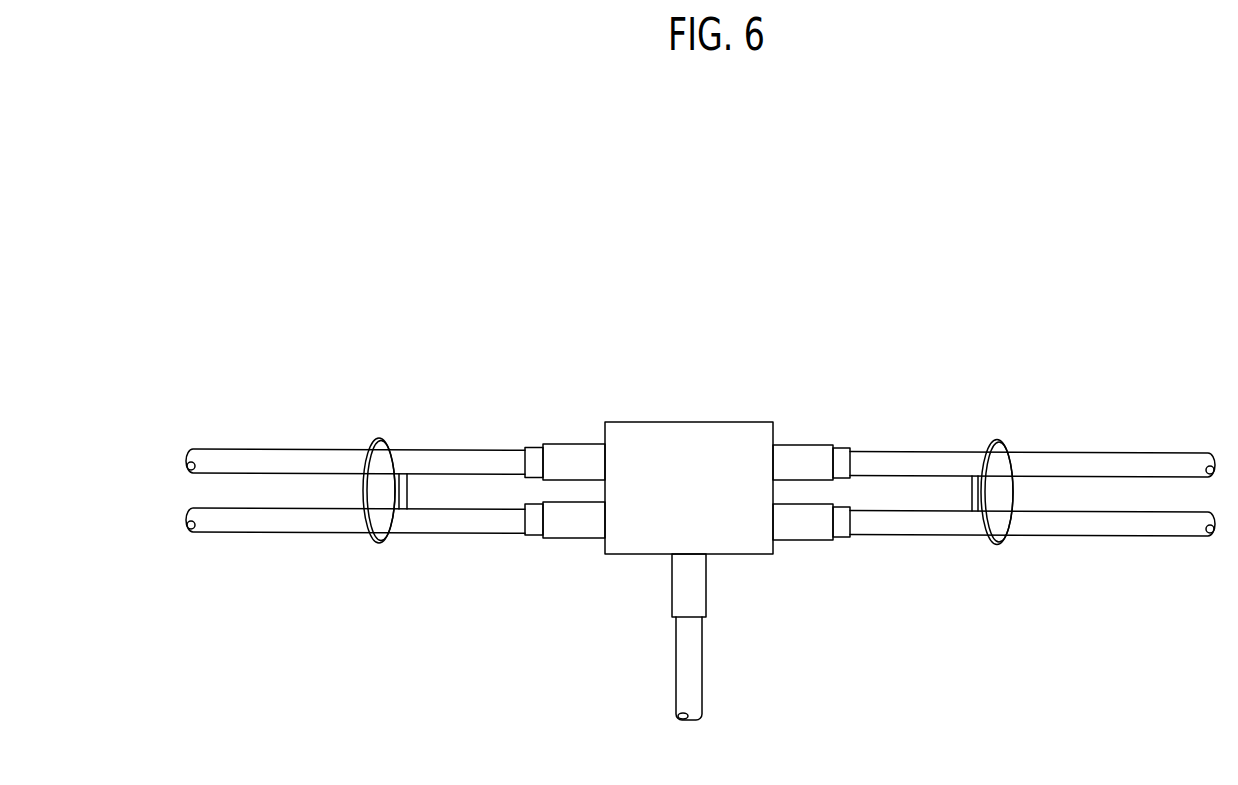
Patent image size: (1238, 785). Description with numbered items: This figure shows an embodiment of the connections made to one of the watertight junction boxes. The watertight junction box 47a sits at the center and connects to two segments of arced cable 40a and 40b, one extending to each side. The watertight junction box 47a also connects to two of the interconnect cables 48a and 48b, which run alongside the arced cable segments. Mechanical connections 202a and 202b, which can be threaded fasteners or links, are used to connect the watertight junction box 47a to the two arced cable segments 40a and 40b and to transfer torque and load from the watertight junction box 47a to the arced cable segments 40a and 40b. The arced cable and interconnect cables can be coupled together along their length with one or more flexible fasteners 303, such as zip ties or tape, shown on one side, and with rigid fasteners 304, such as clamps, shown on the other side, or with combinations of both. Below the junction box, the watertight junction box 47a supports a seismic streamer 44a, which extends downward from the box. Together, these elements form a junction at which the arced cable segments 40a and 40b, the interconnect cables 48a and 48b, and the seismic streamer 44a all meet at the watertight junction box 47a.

The watertight junction box 47a is at (685, 422).
The mechanical connection 202b is at (532, 443).
The mechanical connection 202a is at (847, 448).
The arced cable segment 40b is at (440, 448).
The interconnect cable 48b is at (475, 533).
The arced cable segment 40a is at (927, 450).
The interconnect cable 48a is at (940, 535).
The flexible fastener 303 is at (383, 432).
The rigid fastener 304 is at (1002, 440).
The seismic streamer 44a is at (702, 677).